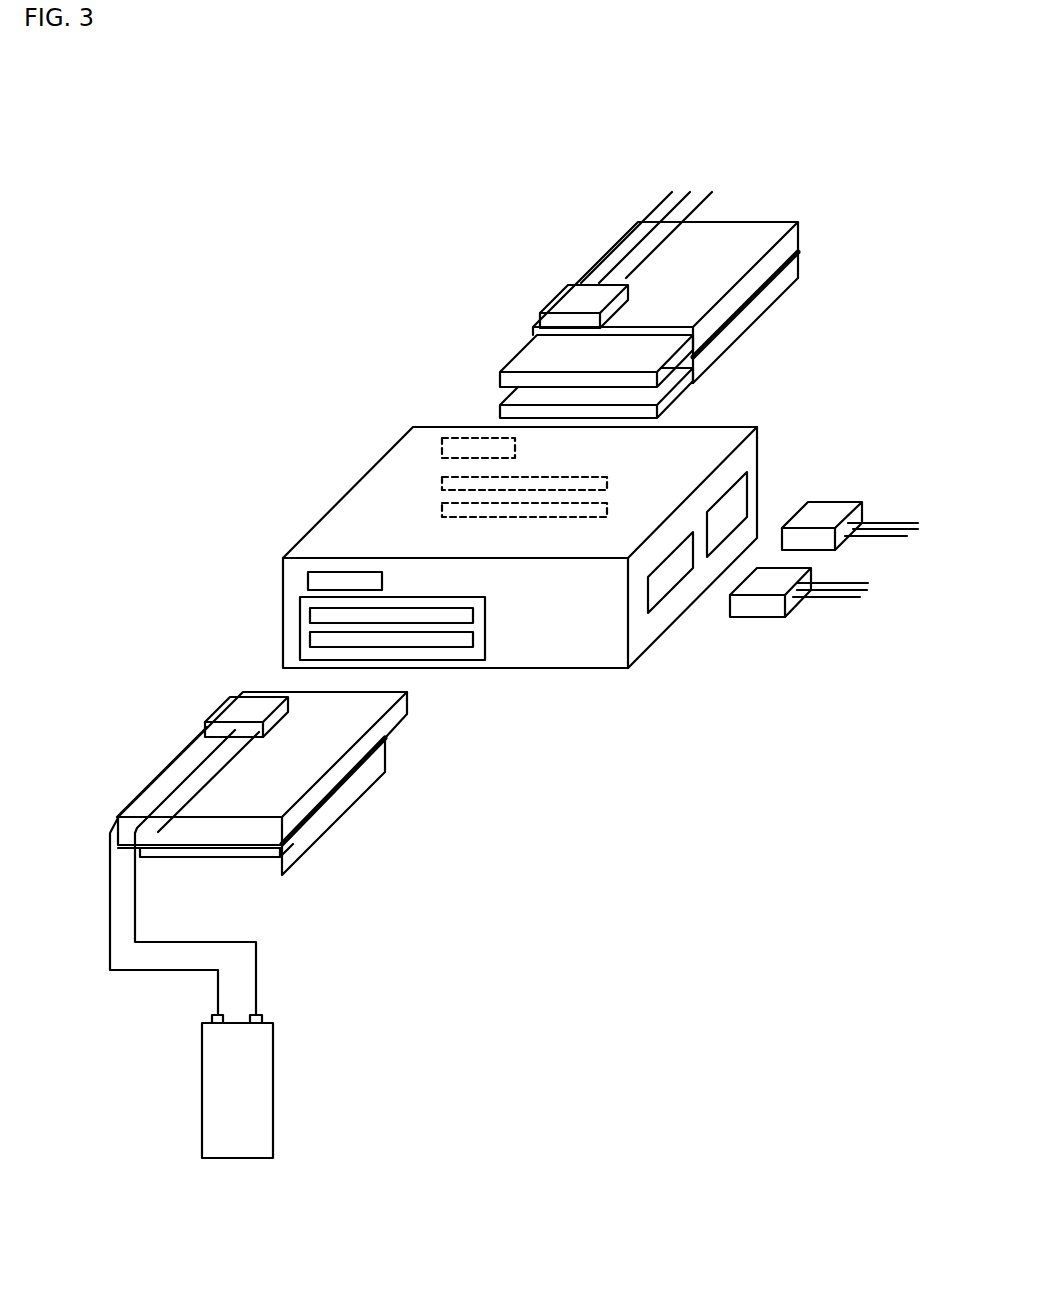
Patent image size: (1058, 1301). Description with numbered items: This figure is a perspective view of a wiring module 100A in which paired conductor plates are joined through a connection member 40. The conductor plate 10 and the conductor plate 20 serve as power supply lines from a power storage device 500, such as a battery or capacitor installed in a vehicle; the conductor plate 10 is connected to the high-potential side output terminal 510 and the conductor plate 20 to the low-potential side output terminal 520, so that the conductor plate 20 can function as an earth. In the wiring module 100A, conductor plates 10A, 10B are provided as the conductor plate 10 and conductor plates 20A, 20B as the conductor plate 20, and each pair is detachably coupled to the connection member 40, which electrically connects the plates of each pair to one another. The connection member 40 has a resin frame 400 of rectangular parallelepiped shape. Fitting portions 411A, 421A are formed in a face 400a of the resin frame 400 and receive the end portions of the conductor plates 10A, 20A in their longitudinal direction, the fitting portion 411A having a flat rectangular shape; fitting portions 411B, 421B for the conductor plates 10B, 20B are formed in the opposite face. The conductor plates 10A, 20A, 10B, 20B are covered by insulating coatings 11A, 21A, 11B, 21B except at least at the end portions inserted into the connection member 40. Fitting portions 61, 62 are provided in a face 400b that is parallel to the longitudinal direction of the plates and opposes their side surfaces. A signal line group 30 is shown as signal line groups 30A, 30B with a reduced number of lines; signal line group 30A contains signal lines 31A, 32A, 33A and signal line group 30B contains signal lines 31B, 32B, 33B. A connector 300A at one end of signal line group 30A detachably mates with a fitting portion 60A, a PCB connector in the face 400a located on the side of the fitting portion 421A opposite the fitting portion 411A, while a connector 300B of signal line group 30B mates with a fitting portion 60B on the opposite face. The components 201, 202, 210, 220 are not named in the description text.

The wiring module 100A is at (795, 166).
The connection member 40 is at (340, 500).
The resin frame 400 is at (368, 485).
The face 400a is at (573, 632).
The face 400b is at (752, 445).
The fitting portion 60A is at (352, 573).
The fitting portion 60B is at (453, 437).
The fitting portion 421A is at (418, 613).
The fitting portion 411A is at (450, 637).
The fitting portion 421B is at (573, 477).
The fitting portion 411B is at (613, 503).
The fitting portion 61 is at (675, 573).
The fitting portion 62 is at (737, 498).
The connector 201 is at (772, 618).
The connector 202 is at (820, 508).
The cable 210 is at (820, 606).
The cable 220 is at (874, 500).
The conductor plate 20 is at (503, 545).
The conductor plate 20A is at (565, 712).
The conductor plate 20B is at (655, 343).
The insulating coating 21A is at (318, 790).
The insulating coating 21B is at (777, 253).
The conductor plate 10 is at (476, 563).
The conductor plate 10A is at (400, 740).
The conductor plate 10B is at (680, 388).
The insulating coating 11A is at (302, 845).
The insulating coating 11B is at (762, 307).
The connector 300A is at (240, 700).
The connector 300B is at (565, 302).
The signal line group 30 is at (657, 179).
The signal line group 30A is at (174, 750).
The signal line group 30B is at (733, 114).
The signal line 31A is at (147, 790).
The signal line 32A is at (198, 768).
The signal line 33A is at (195, 797).
The signal line 31B is at (653, 207).
The signal line 32B is at (680, 193).
The signal line 33B is at (707, 193).
The power storage device 500 is at (268, 1089).
The high-potential side output terminal 510 is at (212, 1015).
The low-potential side output terminal 520 is at (262, 1011).